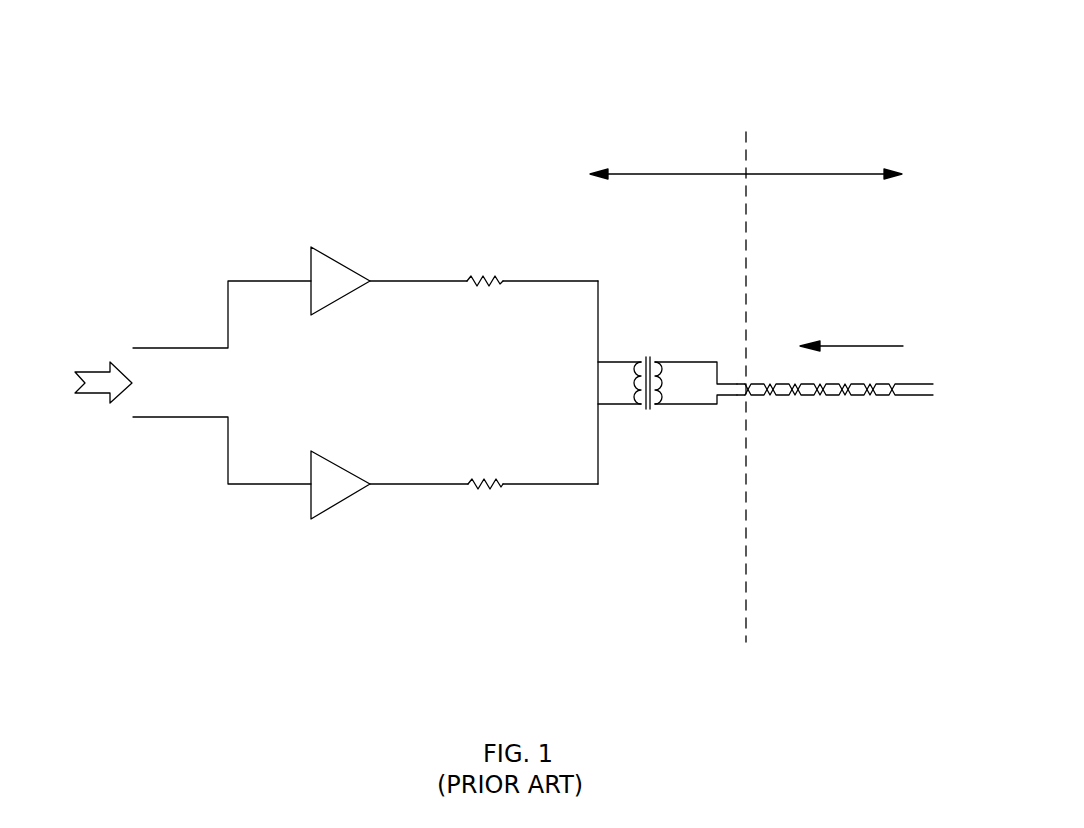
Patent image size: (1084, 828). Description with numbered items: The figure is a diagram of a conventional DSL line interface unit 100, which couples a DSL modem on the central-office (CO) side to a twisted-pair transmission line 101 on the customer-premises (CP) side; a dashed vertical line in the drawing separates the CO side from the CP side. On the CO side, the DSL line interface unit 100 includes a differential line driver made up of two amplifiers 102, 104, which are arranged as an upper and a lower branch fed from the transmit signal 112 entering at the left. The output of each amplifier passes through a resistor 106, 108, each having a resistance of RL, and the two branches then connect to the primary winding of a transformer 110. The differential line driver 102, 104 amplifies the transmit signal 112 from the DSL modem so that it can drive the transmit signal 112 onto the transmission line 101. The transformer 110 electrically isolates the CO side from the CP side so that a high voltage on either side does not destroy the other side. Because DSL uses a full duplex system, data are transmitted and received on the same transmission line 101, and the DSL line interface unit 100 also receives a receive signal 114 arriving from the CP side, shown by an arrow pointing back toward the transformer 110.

The DSL line interface unit 100 is at (576, 89).
The transmission line 101 is at (857, 397).
The amplifier 102 is at (338, 255).
The amplifier 104 is at (355, 498).
The resistor 106 is at (492, 278).
The resistor 108 is at (472, 487).
The transformer 110 is at (645, 333).
The transmit signal 112 is at (95, 398).
The receive signal 114 is at (862, 287).